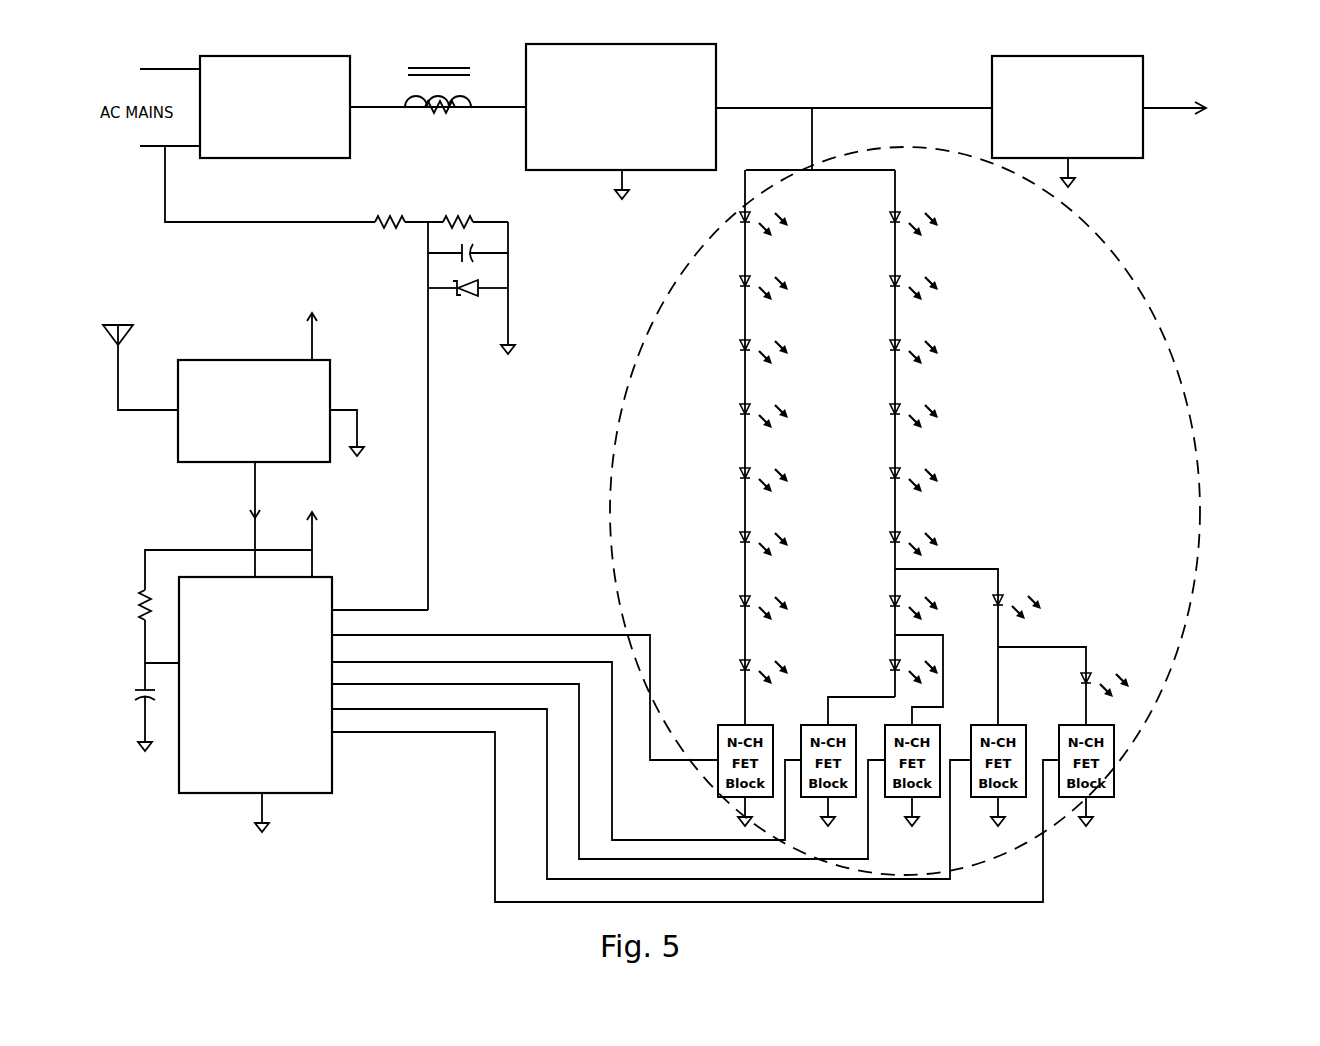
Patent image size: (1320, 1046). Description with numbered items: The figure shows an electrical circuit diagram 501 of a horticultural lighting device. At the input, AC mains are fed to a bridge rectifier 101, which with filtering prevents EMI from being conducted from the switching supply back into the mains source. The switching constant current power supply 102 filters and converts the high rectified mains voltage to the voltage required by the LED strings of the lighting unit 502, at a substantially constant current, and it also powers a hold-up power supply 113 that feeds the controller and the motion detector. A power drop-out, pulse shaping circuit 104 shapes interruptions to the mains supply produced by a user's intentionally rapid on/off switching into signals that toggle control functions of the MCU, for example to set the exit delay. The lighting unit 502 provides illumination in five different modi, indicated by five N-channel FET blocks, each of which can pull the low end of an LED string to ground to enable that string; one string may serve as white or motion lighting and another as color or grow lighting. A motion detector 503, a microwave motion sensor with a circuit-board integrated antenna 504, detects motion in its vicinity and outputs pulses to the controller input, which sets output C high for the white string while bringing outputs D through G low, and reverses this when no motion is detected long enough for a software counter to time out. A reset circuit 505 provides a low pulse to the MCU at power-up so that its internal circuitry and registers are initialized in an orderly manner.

The bridge rectifier 101 is at (275, 126).
The switching constant current power supply 102 is at (621, 123).
The power drop-out, pulse shaping circuit 104 is at (445, 395).
The hold-up power supply 113 is at (1072, 127).
The electrical circuit diagram 501 is at (1220, 184).
The lighting unit 502 is at (1180, 342).
The motion detector 503 is at (270, 431).
The antenna 504 is at (140, 352).
The reset circuit 505 is at (589, 694).